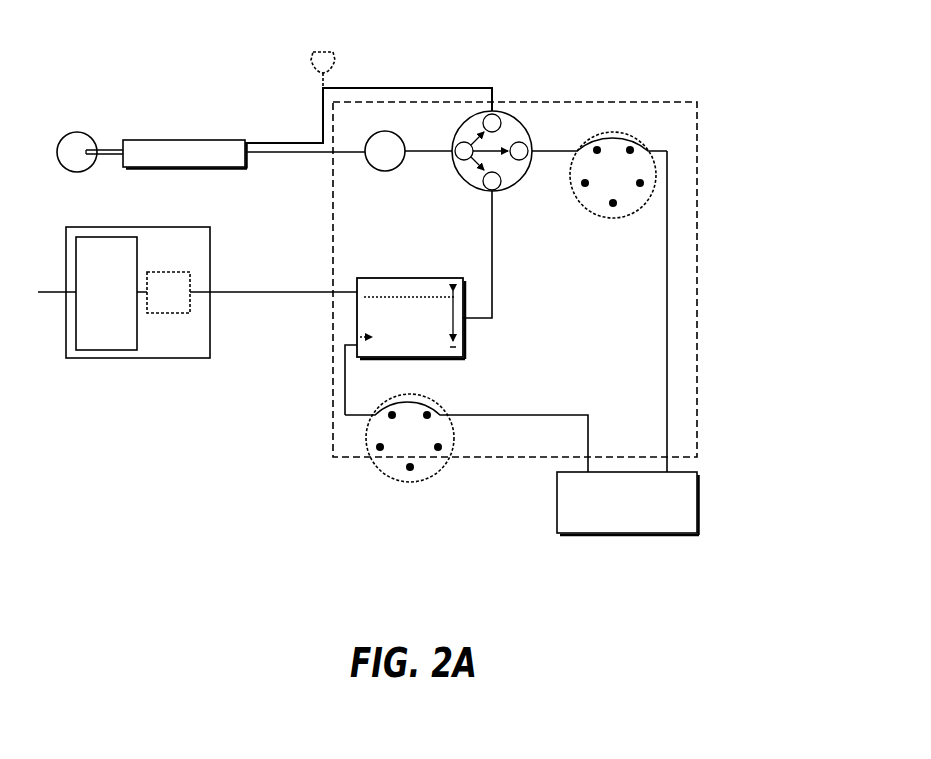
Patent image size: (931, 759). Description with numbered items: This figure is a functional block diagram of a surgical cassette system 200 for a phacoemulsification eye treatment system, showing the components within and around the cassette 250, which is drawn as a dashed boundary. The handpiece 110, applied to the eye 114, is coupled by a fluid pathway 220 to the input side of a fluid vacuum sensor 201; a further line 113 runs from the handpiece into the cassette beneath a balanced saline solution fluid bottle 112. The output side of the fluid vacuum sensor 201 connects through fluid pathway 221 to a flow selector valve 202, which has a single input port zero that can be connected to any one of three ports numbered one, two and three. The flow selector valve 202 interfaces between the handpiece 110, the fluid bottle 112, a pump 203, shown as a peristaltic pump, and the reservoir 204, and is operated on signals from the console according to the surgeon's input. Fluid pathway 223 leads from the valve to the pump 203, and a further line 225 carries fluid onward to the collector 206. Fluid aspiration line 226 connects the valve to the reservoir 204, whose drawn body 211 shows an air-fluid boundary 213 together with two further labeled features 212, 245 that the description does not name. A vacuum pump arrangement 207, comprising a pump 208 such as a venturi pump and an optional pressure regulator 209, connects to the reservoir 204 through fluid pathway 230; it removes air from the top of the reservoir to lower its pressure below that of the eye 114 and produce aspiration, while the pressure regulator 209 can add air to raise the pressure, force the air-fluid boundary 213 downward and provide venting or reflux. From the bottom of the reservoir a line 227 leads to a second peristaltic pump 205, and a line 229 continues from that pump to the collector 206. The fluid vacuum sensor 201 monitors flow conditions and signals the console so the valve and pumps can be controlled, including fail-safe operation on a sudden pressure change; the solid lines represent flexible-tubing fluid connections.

The surgical cassette system 200 is at (728, 31).
The cassette 250 is at (680, 101).
The eye 114 is at (83, 134).
The handpiece 110 is at (142, 139).
The fluid line to valve 113 is at (268, 143).
The fluid pathway 220 is at (282, 153).
The balanced saline solution (BSS) fluid bottle 112 is at (310, 60).
The fluid vacuum sensor 201 is at (383, 131).
The fluid pathway 221 is at (415, 158).
The flow selector valve 202 is at (510, 113).
The fluid pathway 223 is at (545, 151).
The line from pump to collector 225 is at (664, 295).
The pump 203 is at (597, 213).
The fluid aspiration line 226 is at (493, 247).
The reservoir 211 is at (388, 282).
The air-fluid boundary 213 is at (426, 294).
The level range indicator 245 is at (463, 335).
The reservoir inlet 212 is at (357, 330).
The fluid pathway 230 is at (270, 292).
The vacuum pump arrangement 207 is at (103, 358).
The pump 208 is at (93, 237).
The pressure regulator 209 is at (166, 313).
The reservoir 204 is at (400, 359).
The line from reservoir to pump 205 227 is at (345, 383).
The line from pump 205 to collector 229 is at (510, 413).
The peristaltic pump 205 is at (396, 480).
The collector 206 is at (557, 492).